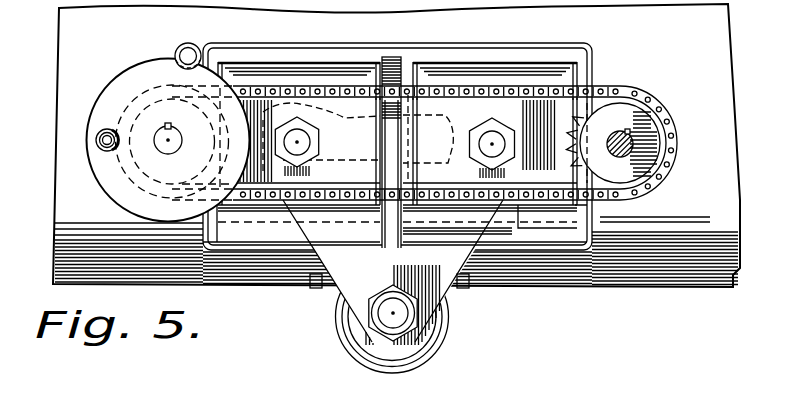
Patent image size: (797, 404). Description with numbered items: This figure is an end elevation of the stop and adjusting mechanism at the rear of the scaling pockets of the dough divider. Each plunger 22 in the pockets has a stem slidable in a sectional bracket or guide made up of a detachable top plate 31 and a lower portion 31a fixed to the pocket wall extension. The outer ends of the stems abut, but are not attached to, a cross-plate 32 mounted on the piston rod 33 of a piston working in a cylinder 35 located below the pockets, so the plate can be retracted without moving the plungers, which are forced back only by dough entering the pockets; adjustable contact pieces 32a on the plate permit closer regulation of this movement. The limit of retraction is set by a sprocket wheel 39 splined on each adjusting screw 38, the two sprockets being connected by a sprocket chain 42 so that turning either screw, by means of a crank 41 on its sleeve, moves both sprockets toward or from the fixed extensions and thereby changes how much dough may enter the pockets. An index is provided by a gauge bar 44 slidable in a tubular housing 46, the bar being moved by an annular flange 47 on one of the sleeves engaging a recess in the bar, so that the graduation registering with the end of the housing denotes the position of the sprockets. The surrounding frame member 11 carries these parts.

The housing 11 is at (292, 42).
The plunger 22 is at (413, 68).
The detachable top plate 31 is at (427, 113).
The lower portion of the bracket or guide 31a is at (463, 75).
The cross-plate 32 is at (342, 289).
The adjustable stops or contact pieces 32a is at (302, 140).
The piston rod 33 is at (393, 313).
The cylinder 35 is at (444, 338).
The adjusting screw 38 is at (628, 160).
The sprocket wheel 39 is at (610, 108).
The crank 41 is at (96, 140).
The sprocket chain 42 is at (337, 87).
The gauge bar 44 is at (176, 53).
The tubular housing 46 is at (189, 43).
The annular flange 47 is at (108, 93).